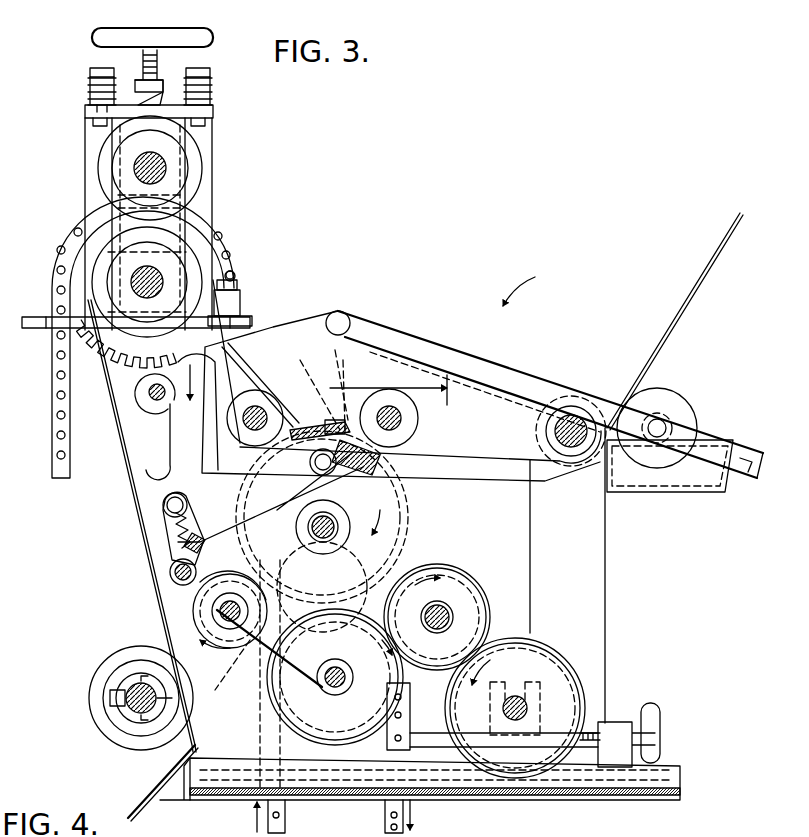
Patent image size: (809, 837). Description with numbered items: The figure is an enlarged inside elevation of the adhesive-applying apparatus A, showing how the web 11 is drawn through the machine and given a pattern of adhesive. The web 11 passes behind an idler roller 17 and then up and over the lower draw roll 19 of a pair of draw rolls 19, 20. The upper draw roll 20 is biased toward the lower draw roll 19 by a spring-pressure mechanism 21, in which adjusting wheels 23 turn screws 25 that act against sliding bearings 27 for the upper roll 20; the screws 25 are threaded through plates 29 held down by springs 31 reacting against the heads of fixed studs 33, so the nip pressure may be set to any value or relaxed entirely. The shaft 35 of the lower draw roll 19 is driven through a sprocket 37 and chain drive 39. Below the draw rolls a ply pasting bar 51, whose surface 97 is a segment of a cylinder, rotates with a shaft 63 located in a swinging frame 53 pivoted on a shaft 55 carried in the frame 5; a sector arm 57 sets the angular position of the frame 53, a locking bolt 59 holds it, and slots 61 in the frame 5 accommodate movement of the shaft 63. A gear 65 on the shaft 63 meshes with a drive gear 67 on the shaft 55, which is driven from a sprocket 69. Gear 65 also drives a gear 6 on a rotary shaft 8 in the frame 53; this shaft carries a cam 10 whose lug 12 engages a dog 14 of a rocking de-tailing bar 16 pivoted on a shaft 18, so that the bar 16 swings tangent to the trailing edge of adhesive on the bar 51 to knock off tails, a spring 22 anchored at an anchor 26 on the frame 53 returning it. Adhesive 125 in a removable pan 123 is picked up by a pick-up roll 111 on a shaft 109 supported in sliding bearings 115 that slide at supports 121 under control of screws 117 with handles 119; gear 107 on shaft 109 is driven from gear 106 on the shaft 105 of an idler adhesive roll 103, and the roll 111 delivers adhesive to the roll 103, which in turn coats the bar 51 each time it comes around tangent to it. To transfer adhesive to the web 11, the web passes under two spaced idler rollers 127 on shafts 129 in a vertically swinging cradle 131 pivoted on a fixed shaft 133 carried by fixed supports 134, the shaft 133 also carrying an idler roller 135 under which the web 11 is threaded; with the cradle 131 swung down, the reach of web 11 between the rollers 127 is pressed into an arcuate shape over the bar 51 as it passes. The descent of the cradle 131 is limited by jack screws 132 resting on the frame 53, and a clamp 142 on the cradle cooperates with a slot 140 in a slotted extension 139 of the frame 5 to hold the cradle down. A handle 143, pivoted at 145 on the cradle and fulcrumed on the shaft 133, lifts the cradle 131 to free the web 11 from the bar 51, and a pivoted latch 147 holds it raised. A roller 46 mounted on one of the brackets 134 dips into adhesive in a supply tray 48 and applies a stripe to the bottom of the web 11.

The frame 5 is at (182, 755).
The gear 6 is at (226, 668).
The rotary shaft 8 is at (218, 612).
The cam 10 is at (160, 630).
The web 11 is at (694, 265).
The lug 12 is at (182, 549).
The dog 14 is at (190, 590).
The de-tailing bar 16 is at (188, 546).
The idler roller 17 is at (100, 676).
The shaft 18 is at (175, 572).
The lower draw roll 19 is at (100, 268).
The upper draw roll 20 is at (125, 163).
The spring-pressure mechanism 21 is at (83, 92).
The spring 22 is at (178, 528).
The adjusting wheels 23 is at (100, 40).
The screws 25 is at (143, 70).
The anchor 26 is at (166, 506).
The sliding bearings 27 is at (180, 145).
The plates 29 is at (215, 112).
The springs 31 is at (88, 99).
The fixed studs 33 is at (92, 70).
The shaft 35 is at (160, 272).
The sprocket 37 is at (118, 348).
The chain drive 39 is at (60, 405).
The roller 46 is at (676, 392).
The supply tray 48 is at (683, 480).
The ply pasting bar 51 is at (385, 458).
The swinging frame 53 is at (250, 660).
The shaft 55 is at (330, 680).
The sector arm 57 is at (298, 584).
The locking bolt 59 is at (240, 535).
The slots 61 is at (262, 515).
The shaft 63 is at (310, 527).
The gear 65 is at (405, 505).
The drive gear 67 is at (338, 800).
The sprocket 69 is at (375, 790).
The cylinder segment surface 97 is at (336, 420).
The idler adhesive roll 103 is at (470, 576).
The shaft 105 is at (447, 615).
The gear 106 is at (485, 582).
The gear 107 is at (570, 648).
The shaft 109 is at (515, 722).
The adhesive pick-up roll 111 is at (520, 642).
The sliding bearing 115 is at (552, 692).
The screws 117 is at (588, 748).
The handles 119 is at (660, 715).
The supports 121 is at (420, 760).
The removable pan 123 is at (187, 775).
The adhesive 125 is at (470, 790).
The idler rollers 127 is at (262, 394).
The shafts 129 is at (158, 400).
The cradle 131 is at (308, 322).
The jack screws 132 is at (315, 465).
The fixed shaft 133 is at (572, 420).
The fixed supports 134 is at (590, 530).
The idler roller 135 is at (557, 408).
The slotted extension 139 is at (318, 408).
The slot 140 is at (315, 380).
The clamp 142 is at (340, 395).
The handle 143 is at (424, 336).
The pivot 145 is at (346, 318).
The pivoted latch 147 is at (238, 290).
The adhesive-applying apparatus A is at (526, 283).